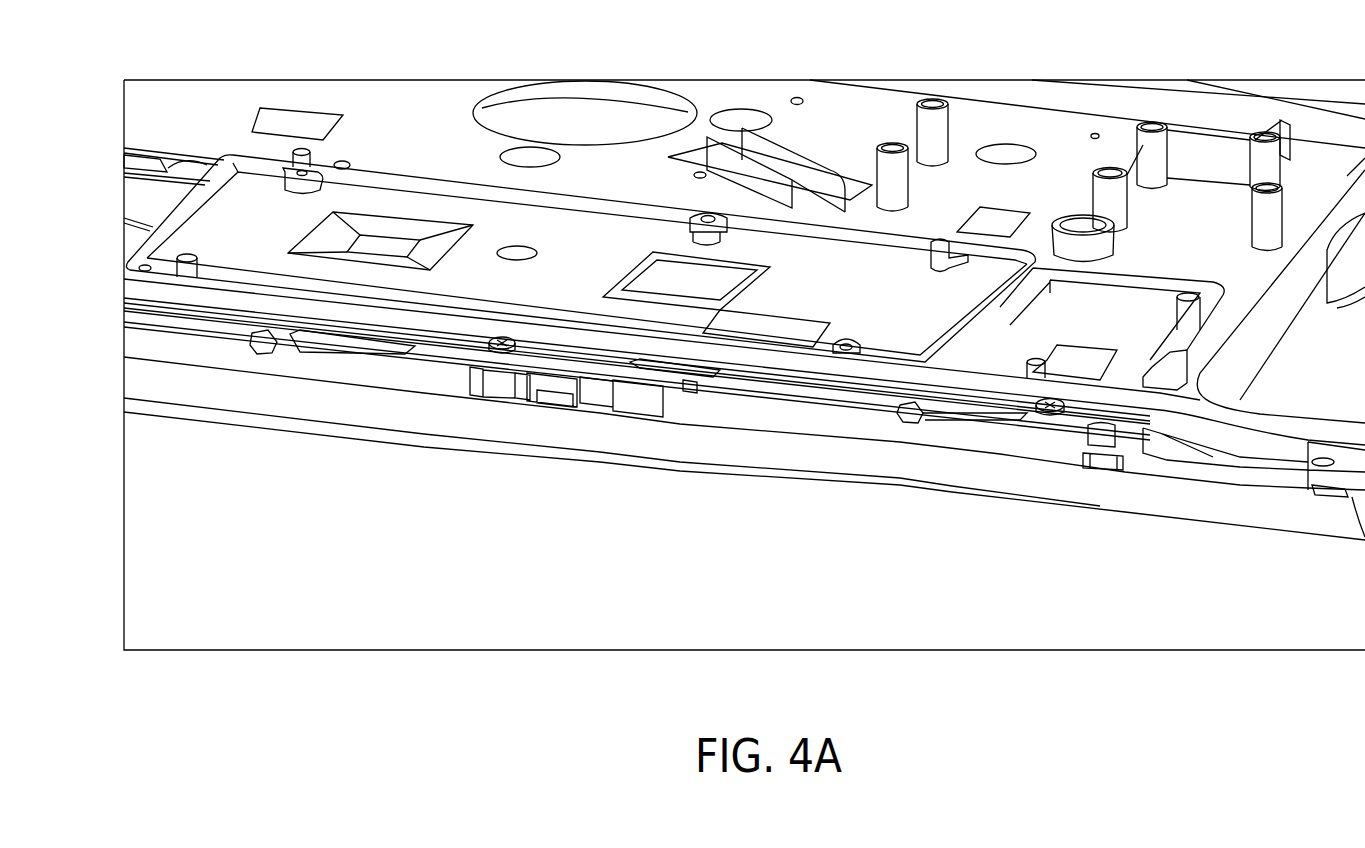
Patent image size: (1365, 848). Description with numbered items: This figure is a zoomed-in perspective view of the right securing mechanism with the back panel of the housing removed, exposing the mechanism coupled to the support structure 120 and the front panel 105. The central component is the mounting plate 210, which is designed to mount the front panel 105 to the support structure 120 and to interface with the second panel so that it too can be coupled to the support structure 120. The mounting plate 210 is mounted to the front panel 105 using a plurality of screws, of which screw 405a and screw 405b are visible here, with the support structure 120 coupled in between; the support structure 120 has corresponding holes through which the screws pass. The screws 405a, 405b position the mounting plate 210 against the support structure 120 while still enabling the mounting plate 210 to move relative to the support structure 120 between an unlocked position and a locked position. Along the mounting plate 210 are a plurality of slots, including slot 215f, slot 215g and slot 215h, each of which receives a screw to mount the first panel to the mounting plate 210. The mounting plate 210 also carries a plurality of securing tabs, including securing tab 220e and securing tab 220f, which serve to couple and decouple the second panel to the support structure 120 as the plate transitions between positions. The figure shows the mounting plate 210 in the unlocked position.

The front panel 105 is at (1238, 497).
The support structure 120 is at (862, 104).
The mounting plate 210 is at (597, 335).
The securing tab 220e is at (348, 348).
The securing tab 220f is at (947, 412).
The screw 405a is at (500, 352).
The screw 405b is at (1043, 412).
The slot 215f is at (576, 370).
The slot 215g is at (700, 375).
The slot 215h is at (1118, 428).